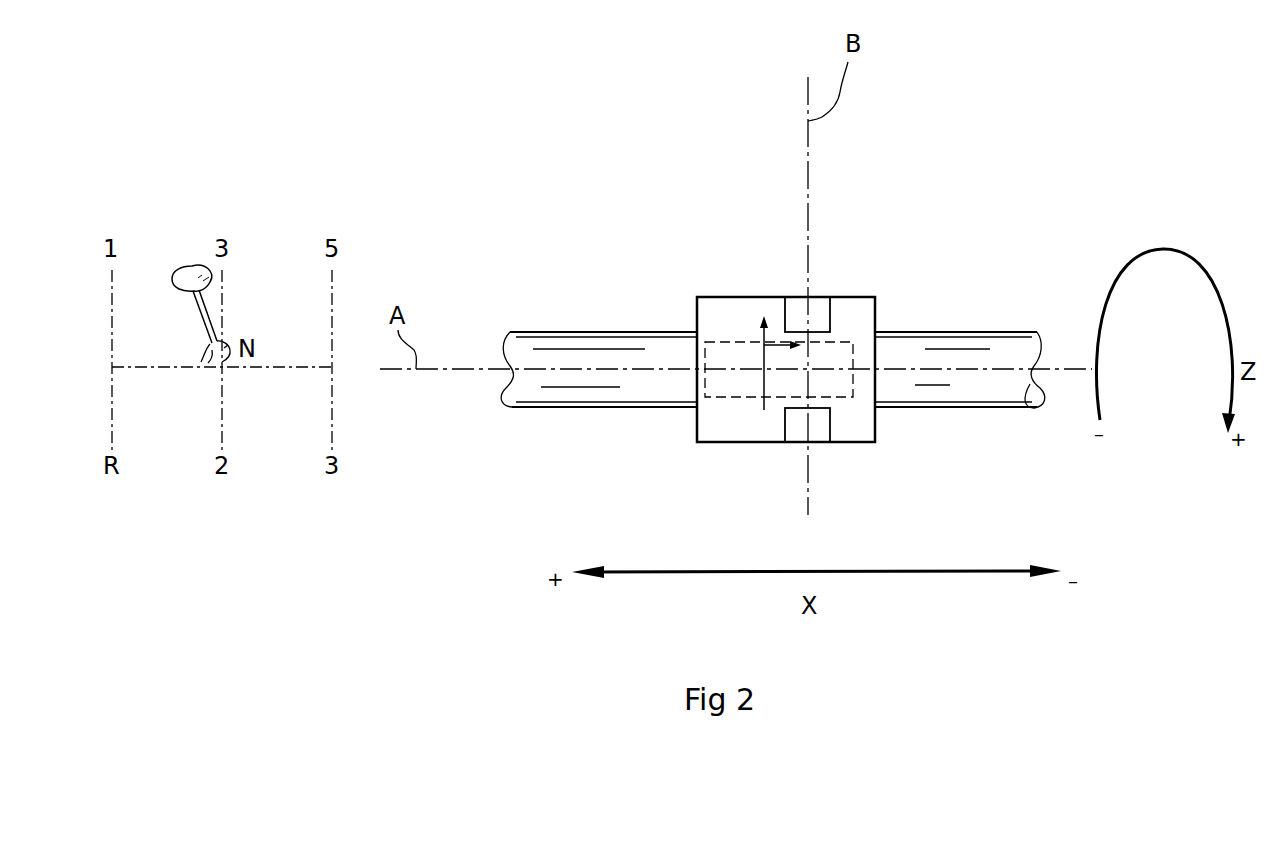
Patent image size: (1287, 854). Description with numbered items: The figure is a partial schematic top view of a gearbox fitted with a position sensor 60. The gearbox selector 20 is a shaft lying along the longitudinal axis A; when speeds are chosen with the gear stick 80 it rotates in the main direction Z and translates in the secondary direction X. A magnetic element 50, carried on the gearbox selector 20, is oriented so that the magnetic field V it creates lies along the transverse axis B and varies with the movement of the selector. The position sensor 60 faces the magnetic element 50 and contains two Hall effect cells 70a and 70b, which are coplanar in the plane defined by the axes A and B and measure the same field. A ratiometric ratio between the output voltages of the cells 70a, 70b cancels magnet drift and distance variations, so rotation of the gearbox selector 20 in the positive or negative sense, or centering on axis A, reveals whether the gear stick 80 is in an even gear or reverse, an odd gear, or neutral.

The gear stick 80 is at (188, 268).
The position sensor 60 is at (734, 304).
The magnetic element 50 is at (738, 382).
The Hall effect cell 70a is at (818, 299).
The Hall effect cell 70b is at (817, 432).
The gearbox selector 20 is at (998, 343).